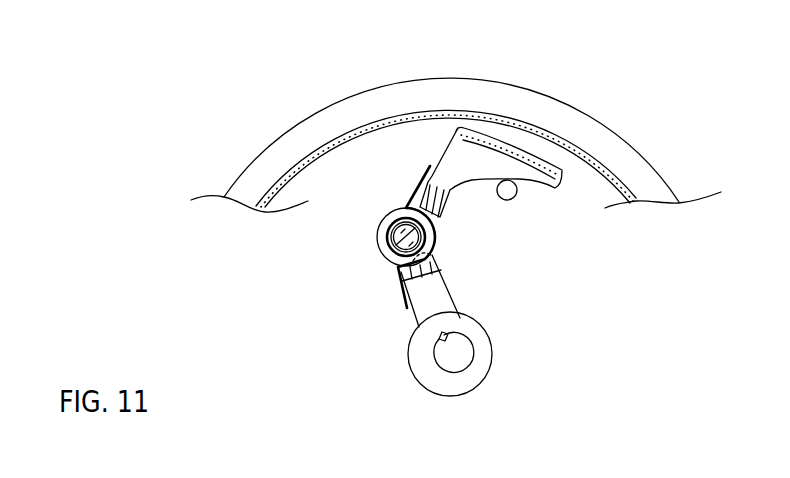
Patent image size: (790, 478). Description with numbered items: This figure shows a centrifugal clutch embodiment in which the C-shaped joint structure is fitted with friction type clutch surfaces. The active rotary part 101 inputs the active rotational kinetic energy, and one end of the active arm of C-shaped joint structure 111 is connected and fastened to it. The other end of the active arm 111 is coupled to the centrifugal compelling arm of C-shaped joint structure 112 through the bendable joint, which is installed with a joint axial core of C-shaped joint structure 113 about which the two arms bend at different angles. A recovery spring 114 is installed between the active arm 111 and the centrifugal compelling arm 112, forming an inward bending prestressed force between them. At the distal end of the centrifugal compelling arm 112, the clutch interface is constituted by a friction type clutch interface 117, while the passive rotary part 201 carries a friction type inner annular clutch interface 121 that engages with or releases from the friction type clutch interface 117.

The passive rotary part 201 is at (293, 151).
The friction type inner annular clutch interface 121 is at (615, 173).
The centrifugal compelling arm of C-shaped joint structure 112 is at (433, 157).
The friction type clutch interface 117 is at (492, 137).
The joint axial core of C-shaped joint structure 113 is at (380, 232).
The active arm of C-shaped joint structure 111 is at (443, 300).
The recovery spring 114 is at (400, 292).
The active rotary part 101 is at (460, 357).